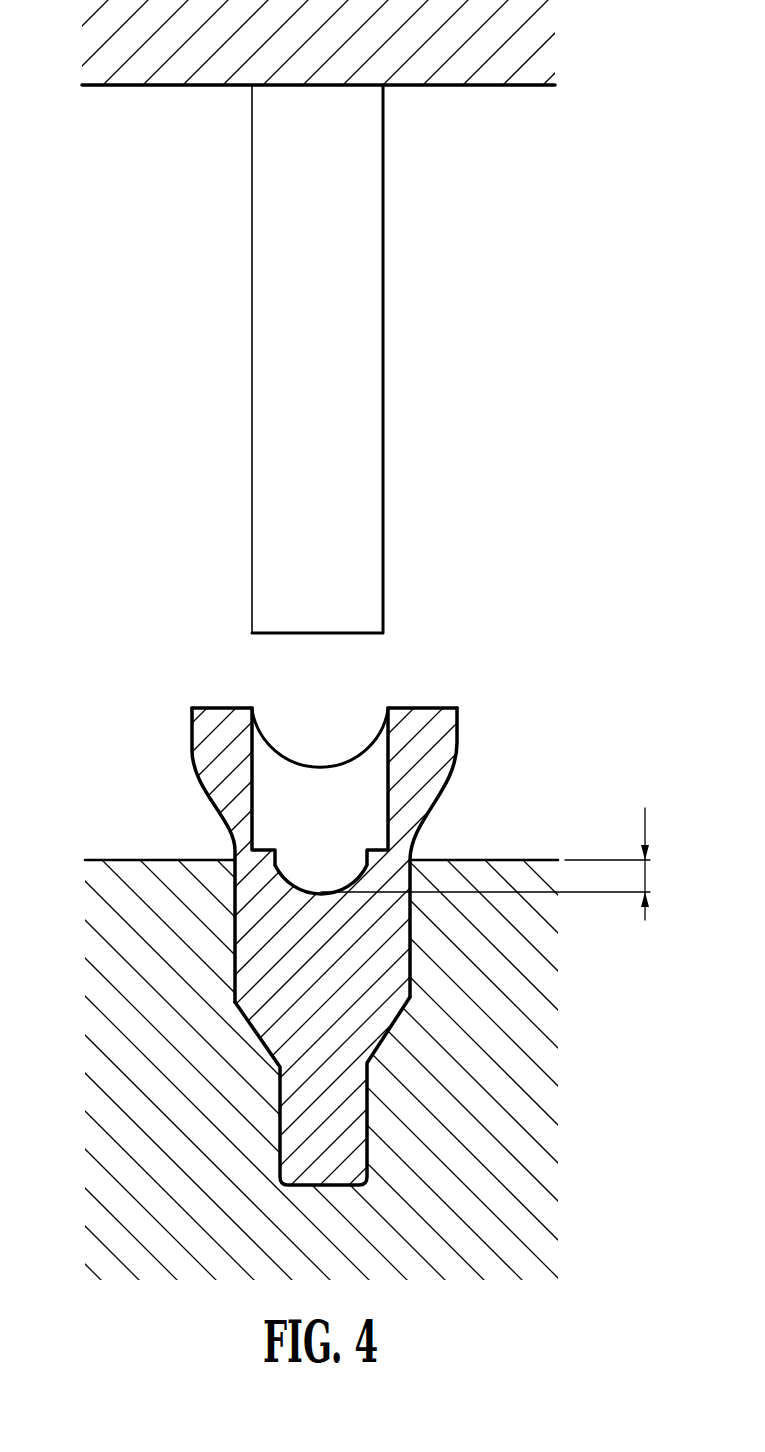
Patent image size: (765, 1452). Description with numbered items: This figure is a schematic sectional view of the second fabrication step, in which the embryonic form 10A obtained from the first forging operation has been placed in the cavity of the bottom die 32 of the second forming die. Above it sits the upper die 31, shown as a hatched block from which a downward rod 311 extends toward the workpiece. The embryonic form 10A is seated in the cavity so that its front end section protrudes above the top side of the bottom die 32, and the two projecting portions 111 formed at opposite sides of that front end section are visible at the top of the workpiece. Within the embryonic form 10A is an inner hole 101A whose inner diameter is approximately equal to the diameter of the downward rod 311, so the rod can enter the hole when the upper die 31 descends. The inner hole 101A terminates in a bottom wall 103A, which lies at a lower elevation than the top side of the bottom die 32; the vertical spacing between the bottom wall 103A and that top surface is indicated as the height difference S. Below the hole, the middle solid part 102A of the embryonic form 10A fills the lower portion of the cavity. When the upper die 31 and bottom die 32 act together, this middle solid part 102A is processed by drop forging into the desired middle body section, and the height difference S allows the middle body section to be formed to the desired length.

The upper die 31 is at (441, 59).
The downward rod 311 is at (370, 323).
The bottom die 32 is at (108, 882).
The embryonic form 10A is at (455, 711).
The projecting portions 111 is at (204, 730).
The inner hole 101A is at (334, 787).
The bottom wall 103A is at (356, 852).
The middle solid part 102A is at (387, 973).
The height difference S is at (485, 864).